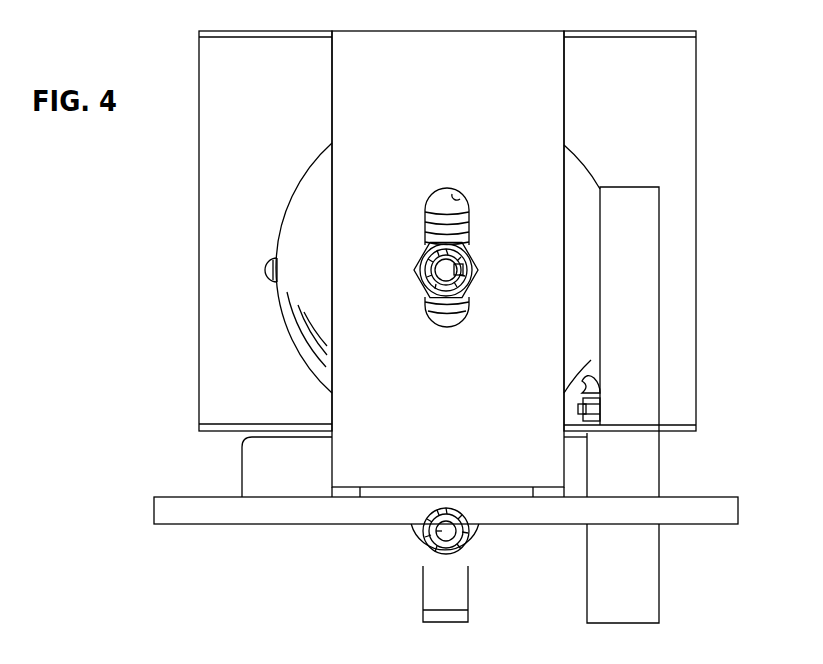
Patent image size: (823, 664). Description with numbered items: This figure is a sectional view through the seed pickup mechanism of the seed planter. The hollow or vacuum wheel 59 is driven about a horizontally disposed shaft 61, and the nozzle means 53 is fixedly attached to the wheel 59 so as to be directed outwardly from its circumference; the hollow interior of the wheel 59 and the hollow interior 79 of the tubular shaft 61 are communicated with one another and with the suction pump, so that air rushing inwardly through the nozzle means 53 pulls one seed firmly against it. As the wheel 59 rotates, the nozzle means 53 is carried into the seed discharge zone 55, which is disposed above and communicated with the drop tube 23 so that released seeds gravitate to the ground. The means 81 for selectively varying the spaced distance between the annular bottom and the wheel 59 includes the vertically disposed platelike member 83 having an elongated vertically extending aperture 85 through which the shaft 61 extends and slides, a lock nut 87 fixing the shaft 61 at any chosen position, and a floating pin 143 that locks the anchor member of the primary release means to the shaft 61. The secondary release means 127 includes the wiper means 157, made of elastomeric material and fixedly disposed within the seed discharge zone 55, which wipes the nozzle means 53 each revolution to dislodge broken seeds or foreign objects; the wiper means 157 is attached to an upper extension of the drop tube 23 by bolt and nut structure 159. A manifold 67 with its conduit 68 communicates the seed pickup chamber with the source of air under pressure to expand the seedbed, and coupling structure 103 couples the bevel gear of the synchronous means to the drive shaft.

The drop tube 23 is at (610, 569).
The nozzle means 53 is at (265, 271).
The seed discharge zone 55 is at (610, 259).
The hollow wheel 59 is at (314, 189).
The horizontally disposed shaft 61 is at (462, 270).
The manifold 67 is at (441, 531).
The conduit 68 is at (466, 540).
The hollow interior of shaft 79 is at (432, 287).
The means for selectively varying the spaced distance 81 is at (509, 223).
The platelike member 83 is at (451, 466).
The elongated vertically extending aperture 85 is at (457, 197).
The lock nut 87 is at (430, 275).
The coupling structure 103 is at (432, 600).
The secondary release means 127 is at (531, 396).
The floating pin 143 is at (432, 268).
The wiper means 157 is at (597, 376).
The bolt and nut structure 159 is at (599, 411).